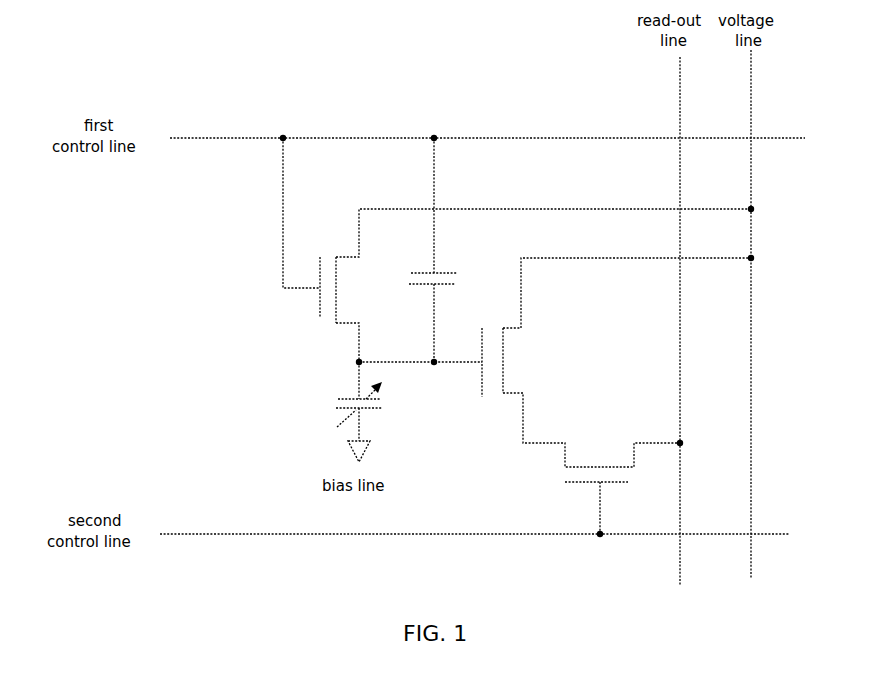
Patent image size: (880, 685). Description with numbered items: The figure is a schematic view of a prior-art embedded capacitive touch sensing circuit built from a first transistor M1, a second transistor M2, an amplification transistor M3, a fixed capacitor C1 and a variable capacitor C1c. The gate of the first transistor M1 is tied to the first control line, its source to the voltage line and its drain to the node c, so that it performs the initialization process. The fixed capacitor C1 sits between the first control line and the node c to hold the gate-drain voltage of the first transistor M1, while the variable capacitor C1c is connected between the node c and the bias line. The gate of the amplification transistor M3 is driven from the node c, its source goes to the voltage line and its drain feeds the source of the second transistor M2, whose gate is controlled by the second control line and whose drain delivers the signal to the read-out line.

The first transistor M1 is at (529, 285).
The second transistor M2 is at (575, 508).
The amplification transistor M3 is at (616, 362).
The fixed capacitor C1 is at (426, 250).
The variable capacitor C1c is at (342, 412).
The node c is at (420, 378).